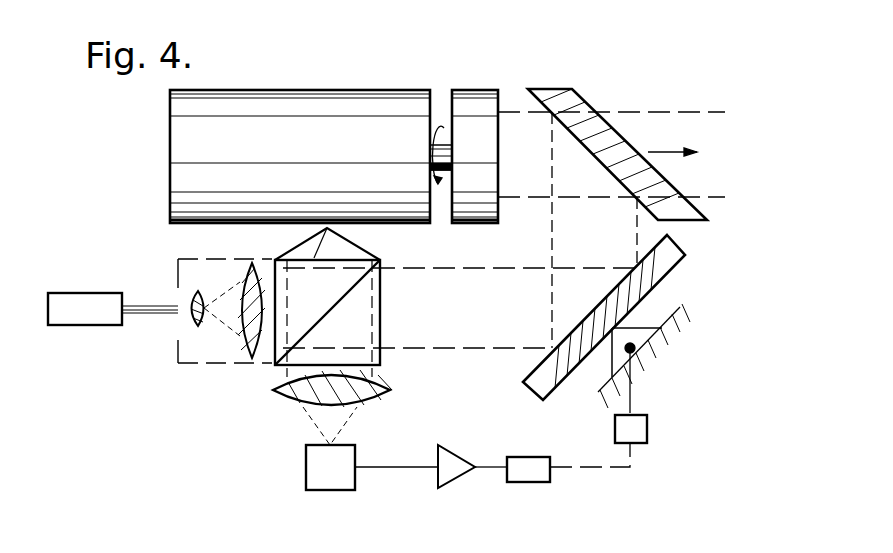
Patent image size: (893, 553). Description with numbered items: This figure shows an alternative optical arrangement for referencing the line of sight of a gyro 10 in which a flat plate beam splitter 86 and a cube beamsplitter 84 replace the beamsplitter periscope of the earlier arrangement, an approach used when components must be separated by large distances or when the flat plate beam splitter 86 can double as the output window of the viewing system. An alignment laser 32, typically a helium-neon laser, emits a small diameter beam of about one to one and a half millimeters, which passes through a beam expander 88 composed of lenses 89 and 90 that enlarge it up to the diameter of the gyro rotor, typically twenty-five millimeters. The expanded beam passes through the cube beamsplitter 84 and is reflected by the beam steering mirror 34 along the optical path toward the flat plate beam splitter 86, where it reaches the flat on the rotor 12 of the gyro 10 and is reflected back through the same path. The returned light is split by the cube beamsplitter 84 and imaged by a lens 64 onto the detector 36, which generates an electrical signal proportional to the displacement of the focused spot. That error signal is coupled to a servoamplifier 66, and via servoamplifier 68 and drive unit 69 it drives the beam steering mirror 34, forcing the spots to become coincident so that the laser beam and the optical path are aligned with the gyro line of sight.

The gyro 10 is at (284, 79).
The gyro rotor 12 is at (497, 90).
The flat plate beam splitter 86 is at (572, 89).
The beam steering mirror 34 is at (543, 400).
The galvanometer driver 69 is at (647, 440).
The servoamplifier 68 is at (510, 457).
The servoamplifier 66 is at (440, 487).
The detector 36 is at (355, 488).
The lens 64 is at (390, 390).
The cube beamsplitter 84 is at (262, 378).
The beam expander 88 is at (178, 259).
The lens 89 is at (197, 327).
The lens 90 is at (245, 358).
The alignment laser 32 is at (88, 293).